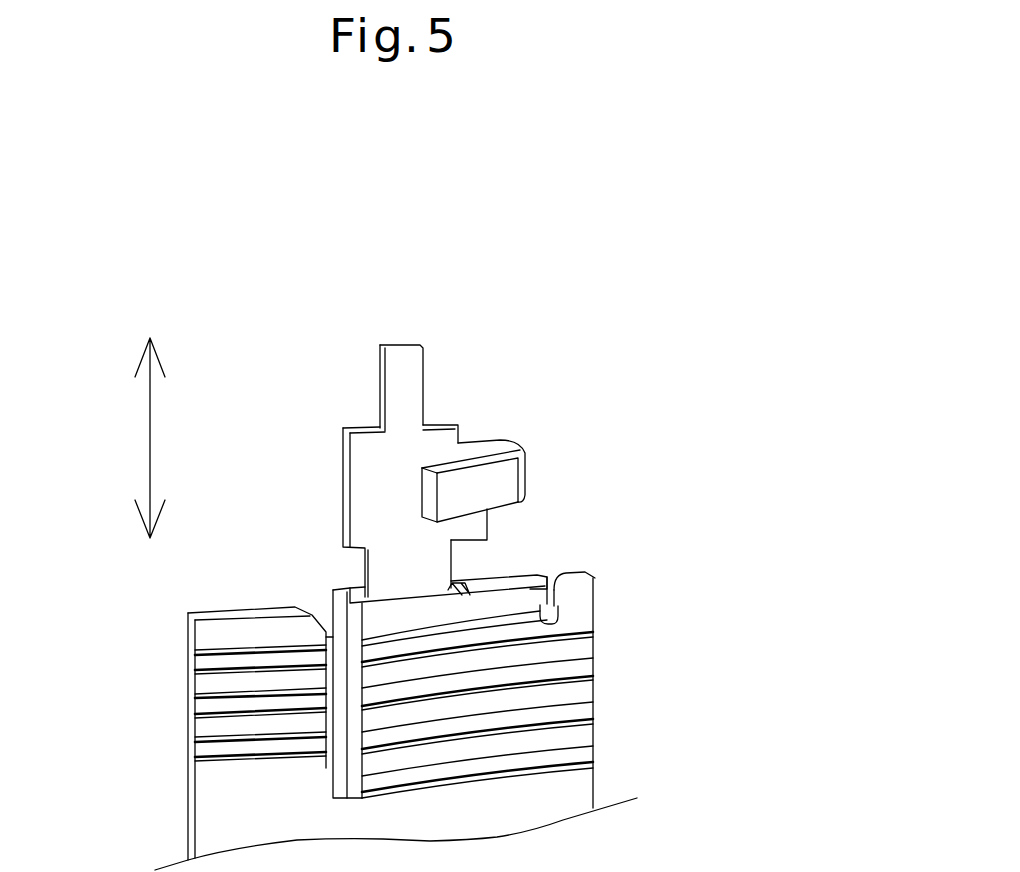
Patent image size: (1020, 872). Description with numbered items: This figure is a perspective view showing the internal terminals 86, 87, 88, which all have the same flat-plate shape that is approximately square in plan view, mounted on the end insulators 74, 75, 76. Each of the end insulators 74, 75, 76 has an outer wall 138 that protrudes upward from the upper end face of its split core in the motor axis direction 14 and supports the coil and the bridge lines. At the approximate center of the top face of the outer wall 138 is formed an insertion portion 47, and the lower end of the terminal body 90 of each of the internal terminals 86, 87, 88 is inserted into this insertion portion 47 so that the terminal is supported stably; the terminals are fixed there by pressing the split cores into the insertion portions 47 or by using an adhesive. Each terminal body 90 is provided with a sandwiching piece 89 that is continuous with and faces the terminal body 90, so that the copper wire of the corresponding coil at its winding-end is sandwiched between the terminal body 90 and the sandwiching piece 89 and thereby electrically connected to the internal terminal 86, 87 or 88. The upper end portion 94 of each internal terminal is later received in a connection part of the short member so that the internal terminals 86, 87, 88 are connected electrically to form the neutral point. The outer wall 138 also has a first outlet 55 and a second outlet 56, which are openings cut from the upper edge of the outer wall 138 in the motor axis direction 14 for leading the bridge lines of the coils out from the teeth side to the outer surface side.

The motor axis direction 14 is at (150, 437).
The insertion portion 47 is at (458, 583).
The first outlet 55 is at (327, 575).
The second outlet 56 is at (568, 570).
The end insulator 74 is at (618, 666).
The end insulator 75 is at (618, 666).
The end insulator 76 is at (618, 666).
The internal terminal 86 is at (570, 400).
The internal terminal 87 is at (570, 400).
The internal terminal 88 is at (446, 424).
The sandwiching piece 89 is at (468, 490).
The terminal body 90 is at (480, 471).
The upper end portion 94 is at (380, 383).
The outer wall 138 is at (130, 701).